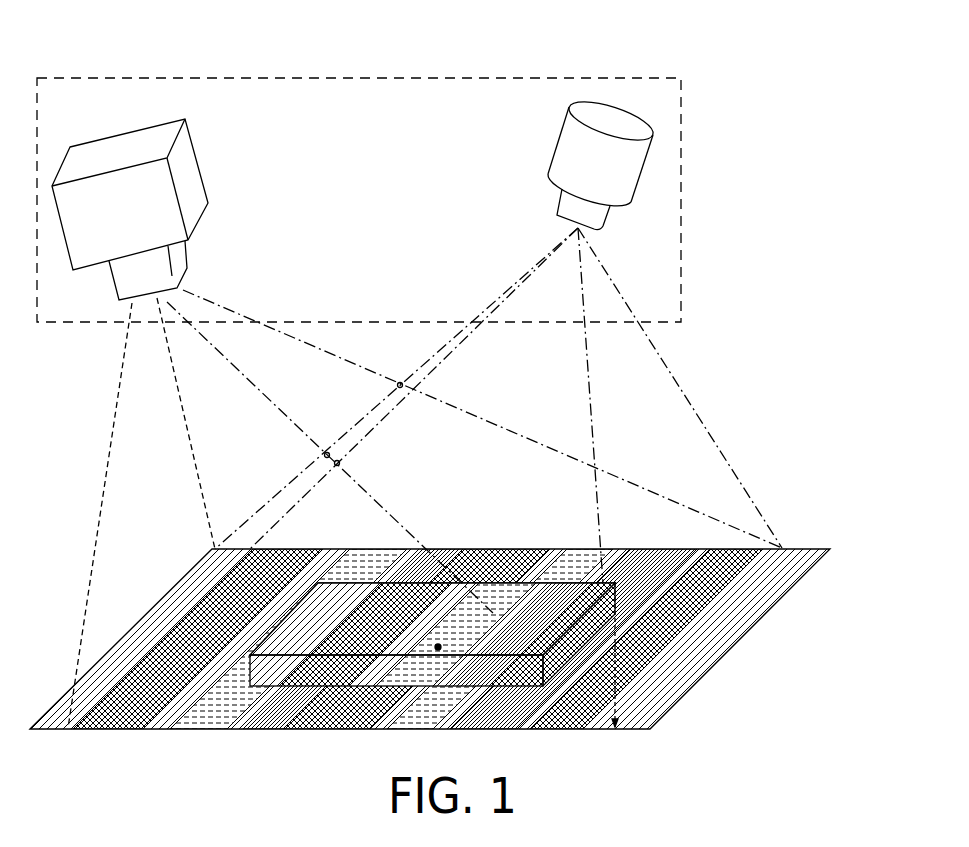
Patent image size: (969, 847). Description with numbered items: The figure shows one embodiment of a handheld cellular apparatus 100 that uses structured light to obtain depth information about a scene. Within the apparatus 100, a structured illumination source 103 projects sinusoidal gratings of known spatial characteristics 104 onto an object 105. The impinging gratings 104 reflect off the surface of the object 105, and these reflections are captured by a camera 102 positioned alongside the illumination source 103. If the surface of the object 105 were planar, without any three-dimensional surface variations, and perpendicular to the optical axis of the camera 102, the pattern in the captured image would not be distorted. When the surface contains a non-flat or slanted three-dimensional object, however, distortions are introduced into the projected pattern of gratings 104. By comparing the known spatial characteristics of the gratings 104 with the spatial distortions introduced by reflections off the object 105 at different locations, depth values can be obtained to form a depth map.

The handheld cellular apparatus 100 is at (385, 77).
The camera 102 is at (164, 116).
The structured illumination source 103 is at (613, 120).
The sinusoidal gratings of known spatial characteristics 104 is at (745, 641).
The object 105 is at (240, 670).